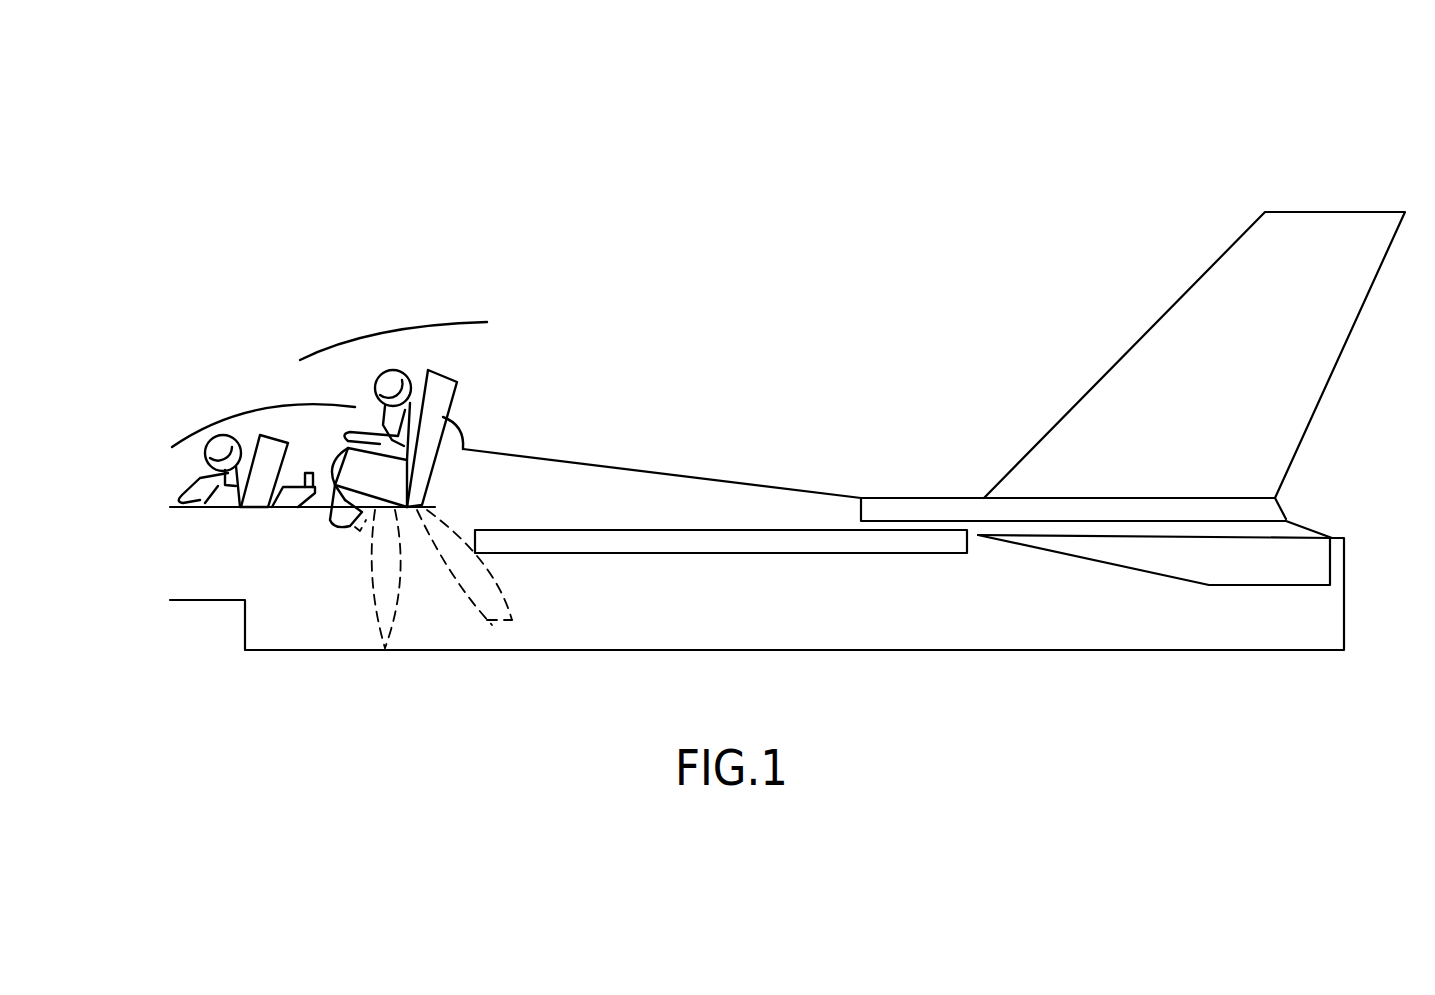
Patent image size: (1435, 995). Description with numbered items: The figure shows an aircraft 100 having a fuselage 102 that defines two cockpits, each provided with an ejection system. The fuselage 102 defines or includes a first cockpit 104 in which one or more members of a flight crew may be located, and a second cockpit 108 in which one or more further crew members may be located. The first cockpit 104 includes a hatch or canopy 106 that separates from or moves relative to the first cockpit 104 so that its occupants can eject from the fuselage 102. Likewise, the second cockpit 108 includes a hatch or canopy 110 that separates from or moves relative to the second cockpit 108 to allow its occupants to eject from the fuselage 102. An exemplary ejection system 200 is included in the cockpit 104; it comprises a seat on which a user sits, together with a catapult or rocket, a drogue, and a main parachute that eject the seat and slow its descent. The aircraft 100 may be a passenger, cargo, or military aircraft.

The aircraft 100 is at (953, 258).
The fuselage 102 is at (889, 497).
The cockpit 104 is at (200, 404).
The canopy 106 is at (287, 407).
The second cockpit 108 is at (432, 416).
The canopy 110 is at (345, 337).
The ejection system 200 is at (429, 404).